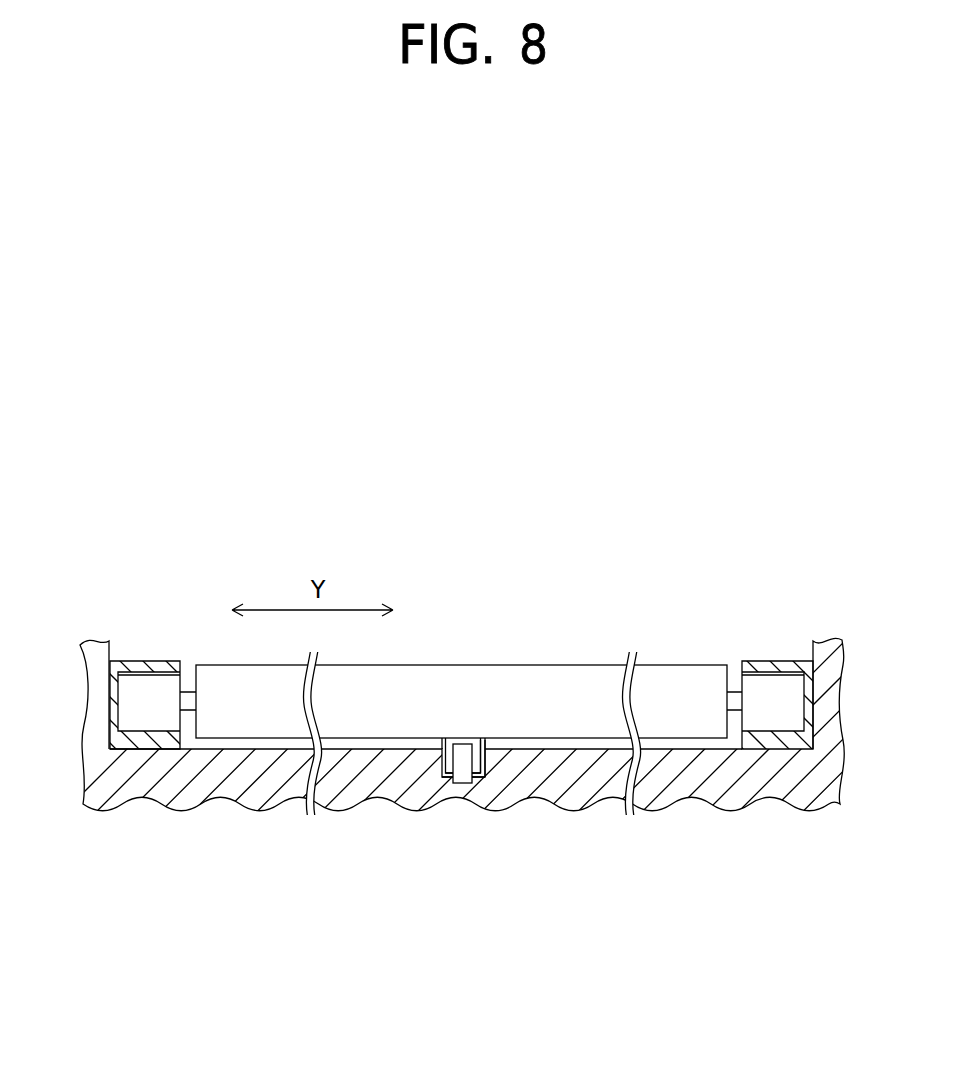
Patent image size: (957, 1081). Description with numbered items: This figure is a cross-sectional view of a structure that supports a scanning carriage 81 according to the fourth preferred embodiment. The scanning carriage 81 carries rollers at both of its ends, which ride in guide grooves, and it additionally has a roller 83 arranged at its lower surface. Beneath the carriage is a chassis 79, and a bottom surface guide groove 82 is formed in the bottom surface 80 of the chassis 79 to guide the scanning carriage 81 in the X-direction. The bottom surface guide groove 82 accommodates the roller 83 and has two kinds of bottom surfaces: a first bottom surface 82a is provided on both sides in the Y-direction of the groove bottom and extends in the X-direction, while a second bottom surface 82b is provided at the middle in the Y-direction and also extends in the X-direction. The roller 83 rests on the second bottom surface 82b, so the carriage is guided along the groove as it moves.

The chassis 79 is at (826, 628).
The bottom surface 80 is at (540, 748).
The scanning carriage 81 is at (503, 650).
The bottom surface guide groove 82 is at (485, 745).
The first bottom surface 82a is at (485, 773).
The second bottom surface 82b is at (464, 783).
The roller 83 is at (460, 765).